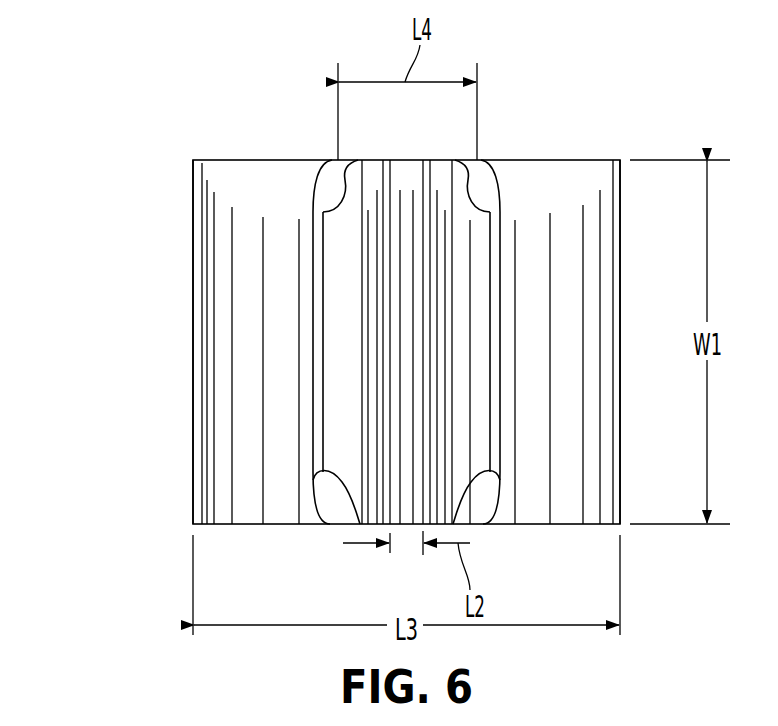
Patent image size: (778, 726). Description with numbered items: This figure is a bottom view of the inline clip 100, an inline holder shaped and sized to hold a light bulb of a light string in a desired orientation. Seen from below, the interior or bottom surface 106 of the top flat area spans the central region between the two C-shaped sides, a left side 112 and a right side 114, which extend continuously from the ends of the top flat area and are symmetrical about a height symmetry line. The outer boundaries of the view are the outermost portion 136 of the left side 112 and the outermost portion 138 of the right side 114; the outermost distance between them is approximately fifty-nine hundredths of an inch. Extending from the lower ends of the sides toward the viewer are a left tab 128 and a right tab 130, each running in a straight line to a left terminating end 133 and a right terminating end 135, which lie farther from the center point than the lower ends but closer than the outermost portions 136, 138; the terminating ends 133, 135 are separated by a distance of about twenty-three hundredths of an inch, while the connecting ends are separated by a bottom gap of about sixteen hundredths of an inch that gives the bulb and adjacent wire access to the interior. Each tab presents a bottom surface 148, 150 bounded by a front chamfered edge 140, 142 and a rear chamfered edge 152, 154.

The inline clip 100 is at (108, 147).
The bottom surface of the top flat area 106 is at (408, 185).
The left side 112 is at (225, 325).
The right side 114 is at (557, 270).
The left tab 128 is at (248, 346).
The right tab 130 is at (563, 346).
The left terminating end 133 is at (315, 369).
The right terminating end 135 is at (495, 277).
The outermost portion of the left side 136 is at (193, 372).
The outermost portion of the right side 138 is at (622, 293).
The front chamfered edge of the left tab 140 is at (327, 524).
The front chamfered edge of the right tab 142 is at (487, 524).
The bottom surface of the left tab 148 is at (315, 413).
The bottom surface of the right tab 150 is at (500, 397).
The rear chamfered edge of the left tab 152 is at (327, 174).
The rear chamfered edge of the right tab 154 is at (485, 175).